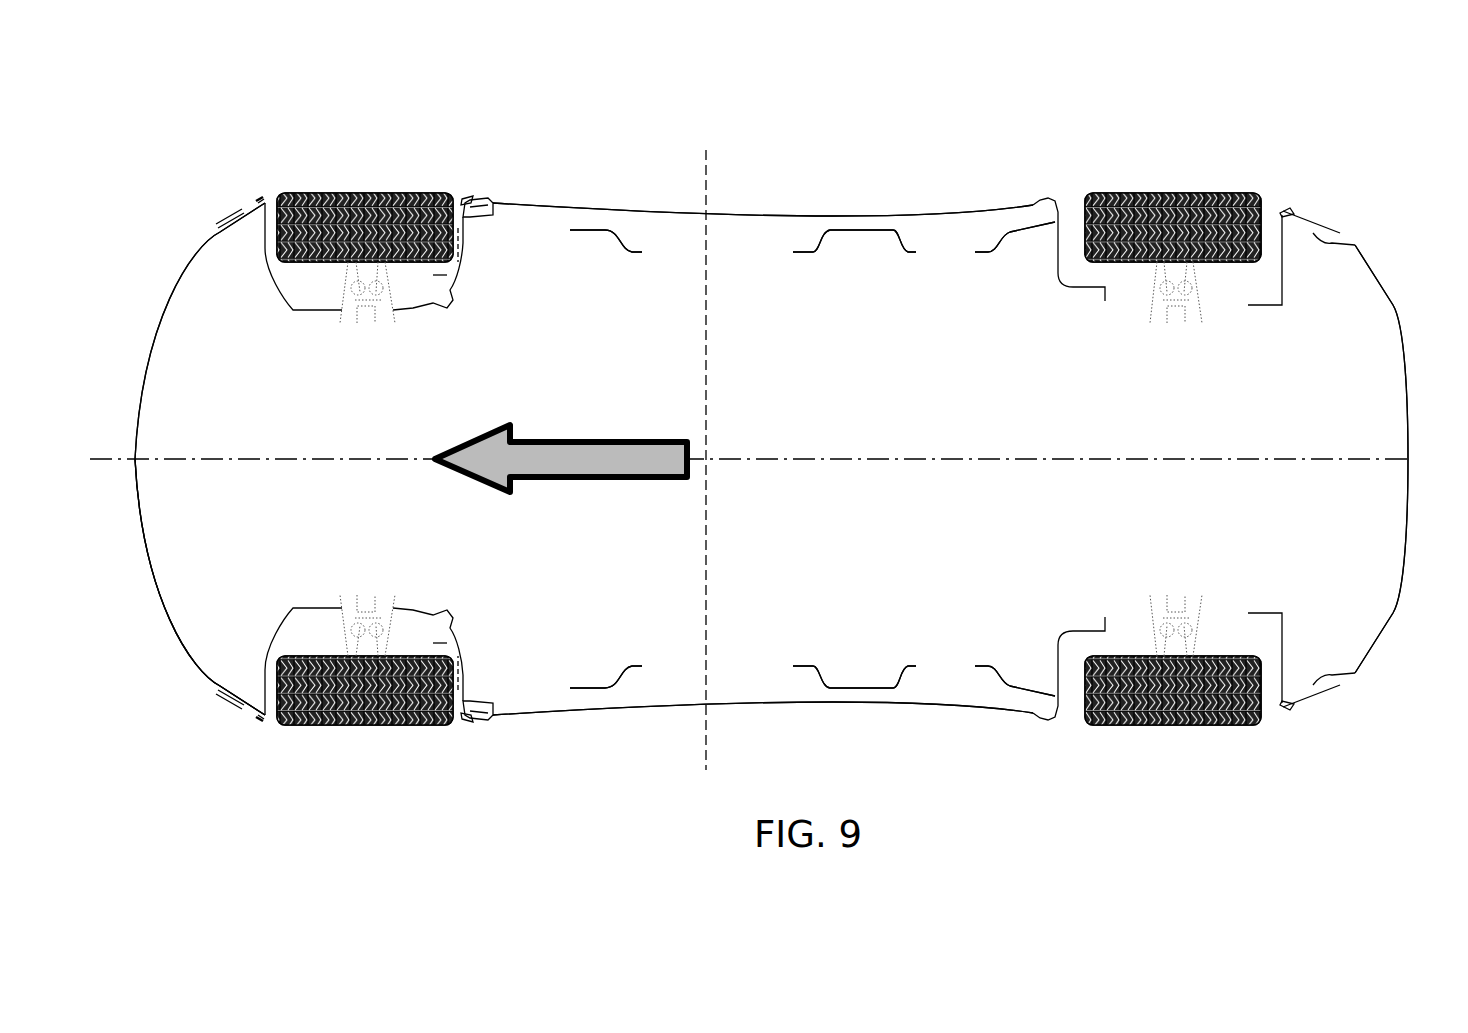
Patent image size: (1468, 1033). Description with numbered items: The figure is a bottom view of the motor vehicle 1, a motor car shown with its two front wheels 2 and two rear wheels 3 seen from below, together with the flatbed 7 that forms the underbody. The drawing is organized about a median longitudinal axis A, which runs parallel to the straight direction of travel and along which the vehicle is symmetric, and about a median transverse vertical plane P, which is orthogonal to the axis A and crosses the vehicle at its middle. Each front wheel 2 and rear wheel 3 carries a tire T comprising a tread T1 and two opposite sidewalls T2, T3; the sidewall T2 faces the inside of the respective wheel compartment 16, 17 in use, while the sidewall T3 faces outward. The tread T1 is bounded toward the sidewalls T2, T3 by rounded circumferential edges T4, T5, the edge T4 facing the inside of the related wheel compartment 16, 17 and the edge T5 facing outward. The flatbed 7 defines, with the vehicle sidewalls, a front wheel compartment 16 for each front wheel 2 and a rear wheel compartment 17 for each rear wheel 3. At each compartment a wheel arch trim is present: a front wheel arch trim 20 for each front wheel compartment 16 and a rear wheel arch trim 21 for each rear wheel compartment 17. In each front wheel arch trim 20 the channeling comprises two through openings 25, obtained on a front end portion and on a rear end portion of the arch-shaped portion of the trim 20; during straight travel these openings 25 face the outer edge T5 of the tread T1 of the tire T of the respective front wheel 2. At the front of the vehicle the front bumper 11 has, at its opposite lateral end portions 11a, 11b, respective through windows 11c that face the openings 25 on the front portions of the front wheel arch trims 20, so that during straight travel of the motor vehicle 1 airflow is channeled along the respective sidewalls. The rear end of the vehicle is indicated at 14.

The motor vehicle 1 is at (884, 172).
The median transverse vertical plane P is at (713, 231).
The median longitudinal axis A is at (1420, 459).
The flatbed 7 is at (765, 292).
The front bumper 11 is at (141, 518).
The lateral end portion of front bumper 11a is at (255, 710).
The lateral end portion of front bumper 11b is at (212, 226).
The through window 11c is at (249, 203).
The rear end 14 is at (1414, 523).
The front wheel 2 is at (342, 191).
The rear wheel 3 is at (1138, 191).
The tire T is at (385, 191).
The front wheel compartment 16 is at (308, 267).
The rear wheel compartment 17 is at (1096, 267).
The front wheel arch trim 20 is at (467, 197).
The rear wheel arch trim 21 is at (1296, 210).
The through opening 25 is at (265, 202).
The tread T1 is at (450, 692).
The inner sidewall T2 is at (425, 645).
The outer sidewall T3 is at (422, 729).
The inner rounded circumferential edge T4 is at (317, 660).
The outer rounded circumferential edge T5 is at (323, 727).